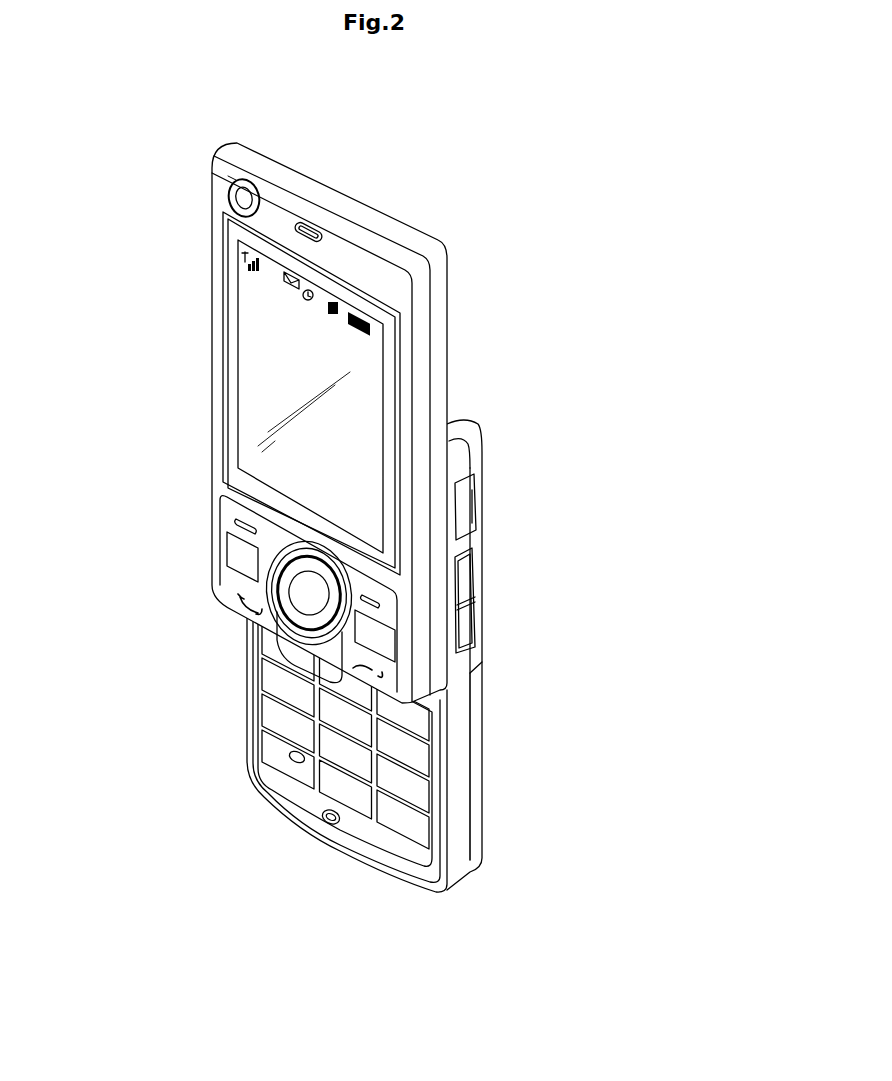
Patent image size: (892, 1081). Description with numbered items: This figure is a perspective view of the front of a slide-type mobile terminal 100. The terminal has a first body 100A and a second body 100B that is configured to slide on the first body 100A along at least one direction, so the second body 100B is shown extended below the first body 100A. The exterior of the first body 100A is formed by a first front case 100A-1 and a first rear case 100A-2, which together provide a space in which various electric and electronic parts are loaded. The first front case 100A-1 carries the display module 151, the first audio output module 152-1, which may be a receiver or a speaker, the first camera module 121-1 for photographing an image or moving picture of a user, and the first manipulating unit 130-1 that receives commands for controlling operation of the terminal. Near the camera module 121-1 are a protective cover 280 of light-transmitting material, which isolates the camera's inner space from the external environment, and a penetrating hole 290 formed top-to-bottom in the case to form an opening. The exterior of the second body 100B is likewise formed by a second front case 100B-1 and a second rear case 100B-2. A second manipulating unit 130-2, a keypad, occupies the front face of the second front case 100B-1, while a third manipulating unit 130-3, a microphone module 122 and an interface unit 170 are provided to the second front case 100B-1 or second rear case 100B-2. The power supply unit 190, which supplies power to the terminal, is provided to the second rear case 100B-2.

The mobile terminal 100 is at (335, 486).
The first body 100A is at (319, 391).
The second body 100B is at (363, 654).
The first front case 100A-1 is at (428, 340).
The first rear case 100A-2 is at (441, 300).
The second front case 100B-1 is at (458, 453).
The second rear case 100B-2 is at (475, 462).
The first camera module 121-1 is at (235, 180).
The protective cover 280 is at (230, 185).
The penetrating hole 290 is at (228, 202).
The display module 151 is at (250, 348).
The first audio output module 152-1 is at (311, 223).
The first manipulating unit 130-1 is at (236, 552).
The second manipulating unit 130-2 is at (266, 742).
The third manipulating unit 130-3 is at (470, 626).
The interface unit 170 is at (470, 500).
The power supply unit 190 is at (477, 752).
The microphone module 122 is at (331, 825).